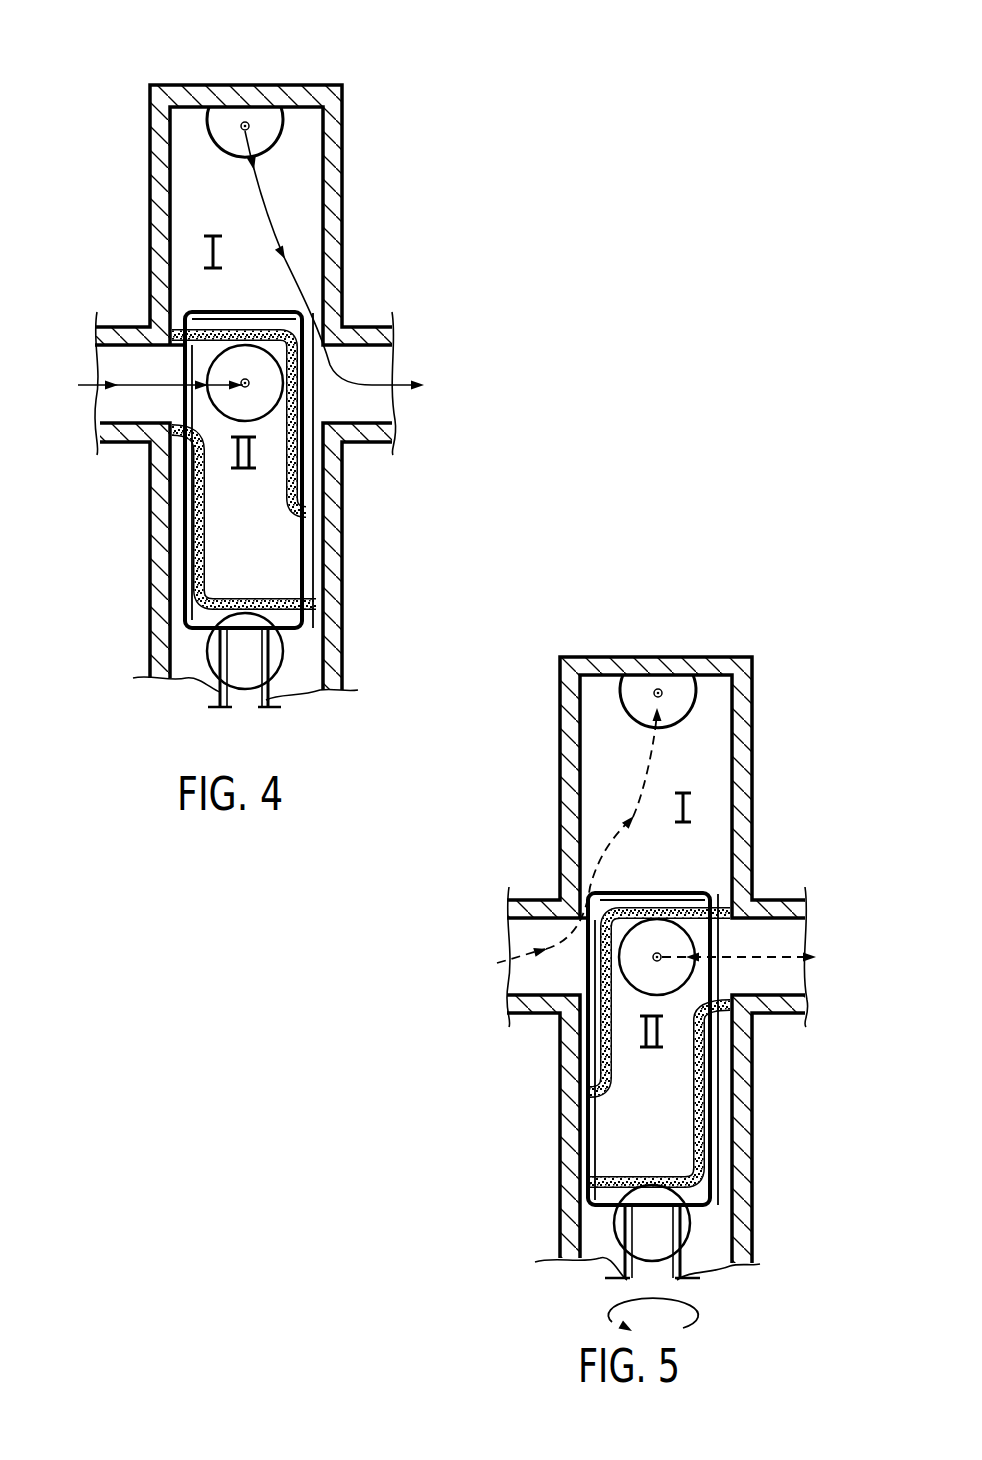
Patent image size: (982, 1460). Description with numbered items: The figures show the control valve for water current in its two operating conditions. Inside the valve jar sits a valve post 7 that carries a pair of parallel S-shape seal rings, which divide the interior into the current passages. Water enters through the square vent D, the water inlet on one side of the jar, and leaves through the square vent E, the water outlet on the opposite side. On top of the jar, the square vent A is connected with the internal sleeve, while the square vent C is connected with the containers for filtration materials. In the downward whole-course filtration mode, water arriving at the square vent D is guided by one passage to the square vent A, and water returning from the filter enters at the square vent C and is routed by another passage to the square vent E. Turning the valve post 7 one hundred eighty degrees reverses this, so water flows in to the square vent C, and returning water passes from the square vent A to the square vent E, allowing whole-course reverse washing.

In FIG. 4, the valve post 7 is at (183, 633).
In FIG. 5, the valve post 7 is at (585, 1207).
In FIG. 4, the square vent A is at (233, 400).
In FIG. 5, the square vent A is at (667, 938).
In FIG. 4, the square vent C is at (265, 123).
In FIG. 5, the square vent C is at (676, 688).
In FIG. 4, the square vent D is at (117, 407).
In FIG. 5, the square vent D is at (521, 978).
In FIG. 4, the square vent E is at (373, 410).
In FIG. 5, the square vent E is at (792, 981).